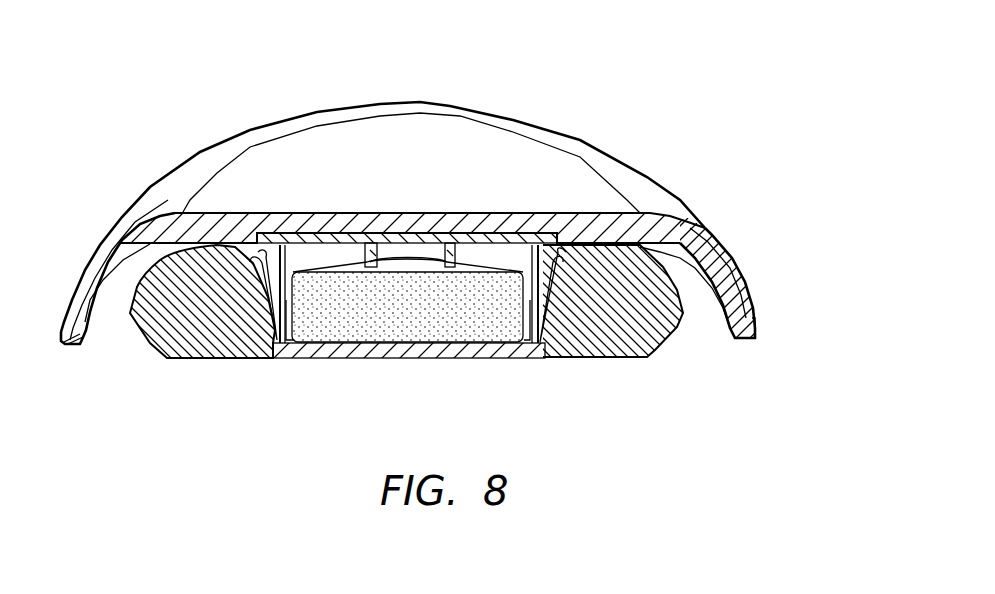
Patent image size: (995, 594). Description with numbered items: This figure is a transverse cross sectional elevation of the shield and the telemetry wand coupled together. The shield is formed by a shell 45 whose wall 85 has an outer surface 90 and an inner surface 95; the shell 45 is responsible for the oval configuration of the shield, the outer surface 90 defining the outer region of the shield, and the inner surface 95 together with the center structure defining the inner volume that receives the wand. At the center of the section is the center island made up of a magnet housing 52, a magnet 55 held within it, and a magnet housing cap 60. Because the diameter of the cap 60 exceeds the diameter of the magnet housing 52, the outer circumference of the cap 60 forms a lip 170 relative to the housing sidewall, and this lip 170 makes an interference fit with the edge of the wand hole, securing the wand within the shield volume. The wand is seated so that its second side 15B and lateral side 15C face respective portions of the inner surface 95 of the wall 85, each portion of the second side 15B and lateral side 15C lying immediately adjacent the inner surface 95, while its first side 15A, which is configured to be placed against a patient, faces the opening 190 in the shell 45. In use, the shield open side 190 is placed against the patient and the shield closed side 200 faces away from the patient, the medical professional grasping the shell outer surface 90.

The shield closed side 200 is at (438, 93).
The outer surface 90 is at (493, 143).
The magnet housing 52 is at (582, 228).
The shell 45 is at (668, 232).
The second side 15B is at (702, 234).
The wall 85 is at (732, 283).
The lateral side 15C is at (688, 314).
The opening 190 is at (700, 345).
The first side 15A is at (608, 345).
The lip 170 is at (549, 334).
The magnet housing cap 60 is at (397, 350).
The magnet 55 is at (423, 323).
The inner surface 95 is at (100, 292).